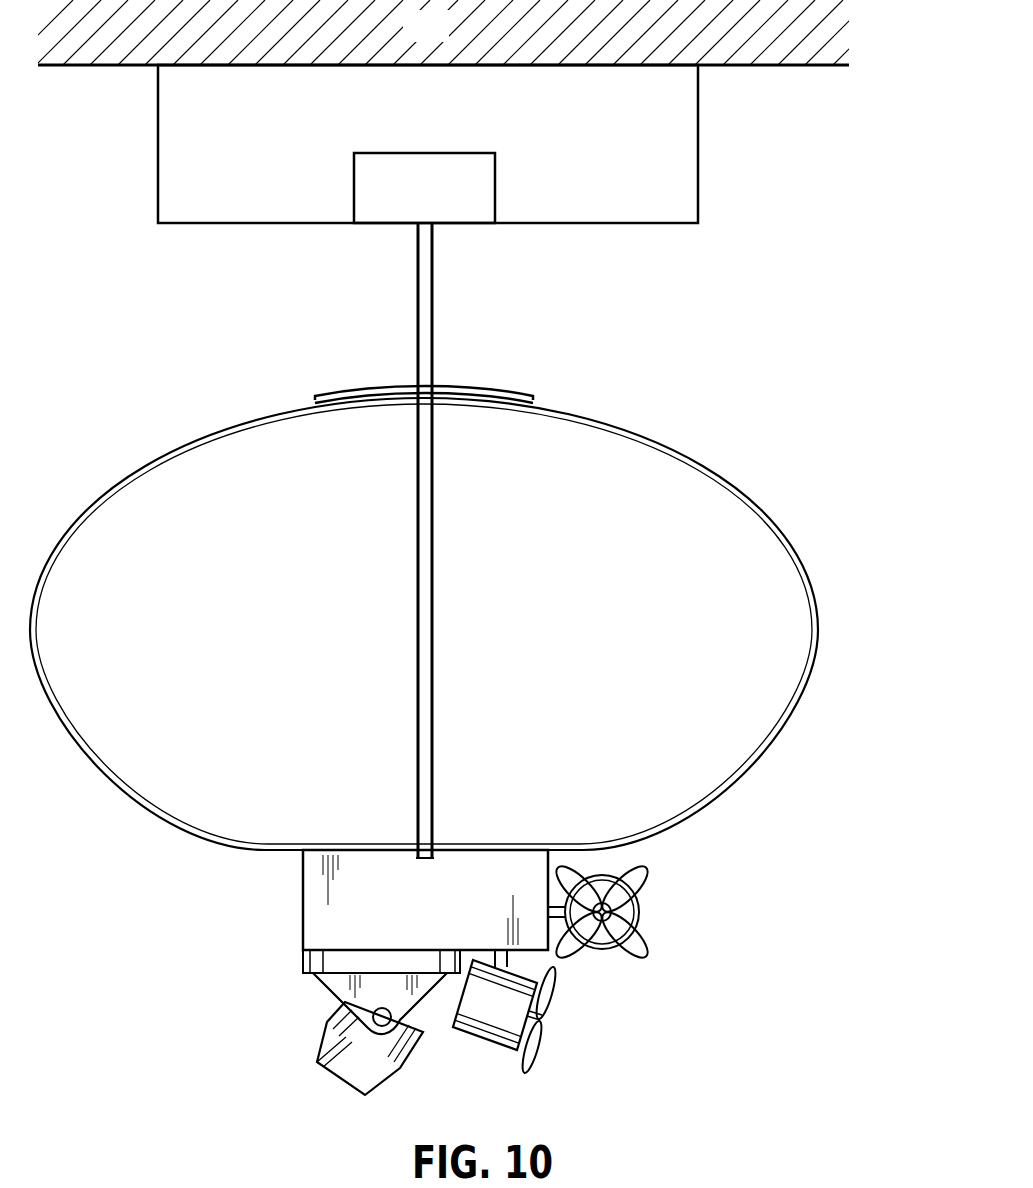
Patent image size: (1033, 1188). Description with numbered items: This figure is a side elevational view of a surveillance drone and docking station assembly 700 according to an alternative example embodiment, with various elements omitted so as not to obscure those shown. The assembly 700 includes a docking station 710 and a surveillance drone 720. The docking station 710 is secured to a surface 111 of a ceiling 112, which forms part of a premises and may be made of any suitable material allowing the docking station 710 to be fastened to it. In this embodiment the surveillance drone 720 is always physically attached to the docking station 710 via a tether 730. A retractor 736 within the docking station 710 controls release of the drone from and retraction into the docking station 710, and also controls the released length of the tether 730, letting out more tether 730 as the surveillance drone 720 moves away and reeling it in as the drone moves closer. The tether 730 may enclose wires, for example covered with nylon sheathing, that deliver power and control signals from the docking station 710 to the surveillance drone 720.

The surface 111 is at (122, 70).
The ceiling 112 is at (444, 38).
The surveillance drone and docking station assembly 700 is at (485, 580).
The docking station 710 is at (447, 110).
The surveillance drone 720 is at (455, 739).
The tether 730 is at (424, 302).
The retractor 736 is at (447, 216).